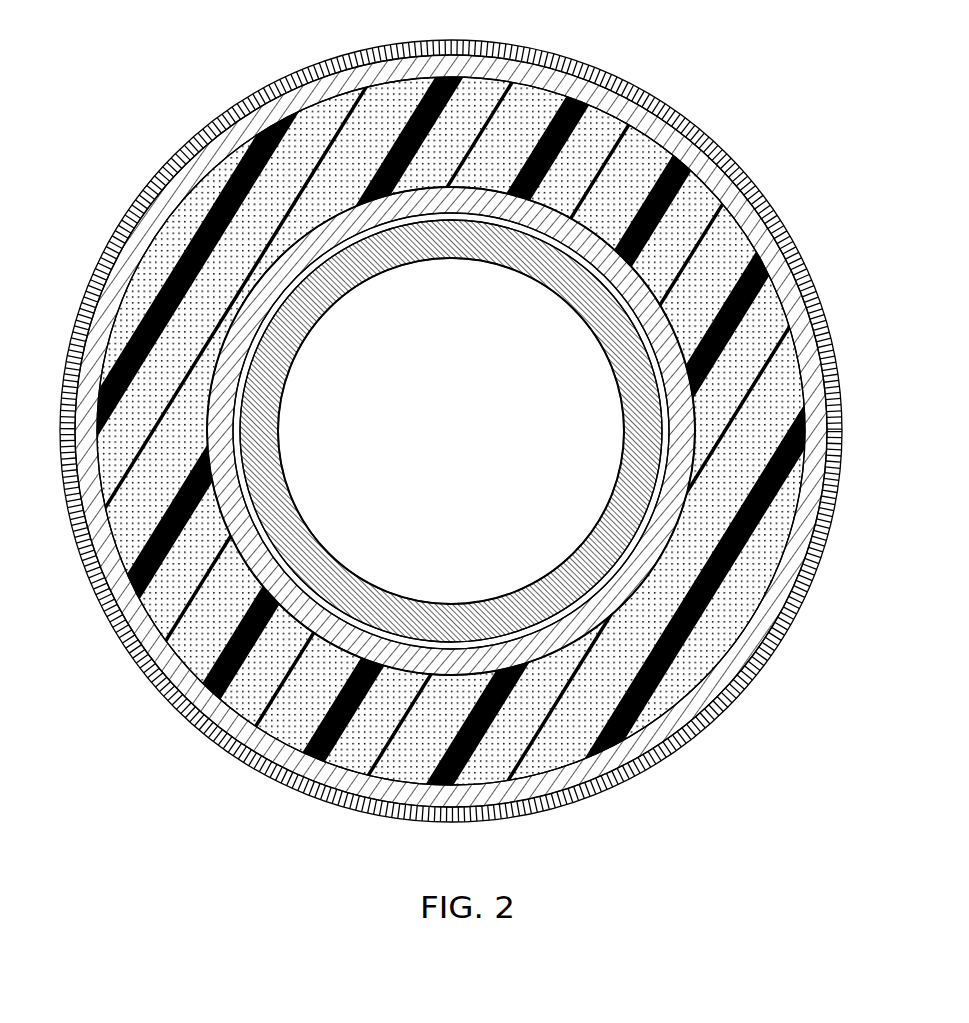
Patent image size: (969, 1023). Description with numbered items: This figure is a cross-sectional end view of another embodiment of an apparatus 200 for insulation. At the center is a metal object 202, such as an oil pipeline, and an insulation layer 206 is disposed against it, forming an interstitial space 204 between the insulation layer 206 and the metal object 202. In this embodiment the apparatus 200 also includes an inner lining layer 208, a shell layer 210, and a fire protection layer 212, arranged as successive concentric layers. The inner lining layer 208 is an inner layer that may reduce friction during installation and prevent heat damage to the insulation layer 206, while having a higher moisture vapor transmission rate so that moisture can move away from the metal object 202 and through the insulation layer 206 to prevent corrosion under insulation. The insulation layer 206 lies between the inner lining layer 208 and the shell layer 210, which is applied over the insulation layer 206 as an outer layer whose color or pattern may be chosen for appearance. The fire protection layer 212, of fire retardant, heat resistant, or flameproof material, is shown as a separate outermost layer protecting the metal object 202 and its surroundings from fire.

The apparatus for insulation 200 is at (130, 74).
The metal object 202 is at (558, 268).
The interstitial space 204 is at (647, 328).
The insulation layer 206 is at (713, 413).
The inner lining layer 208 is at (671, 498).
The shell layer 210 is at (733, 660).
The fire protection layer 212 is at (693, 737).